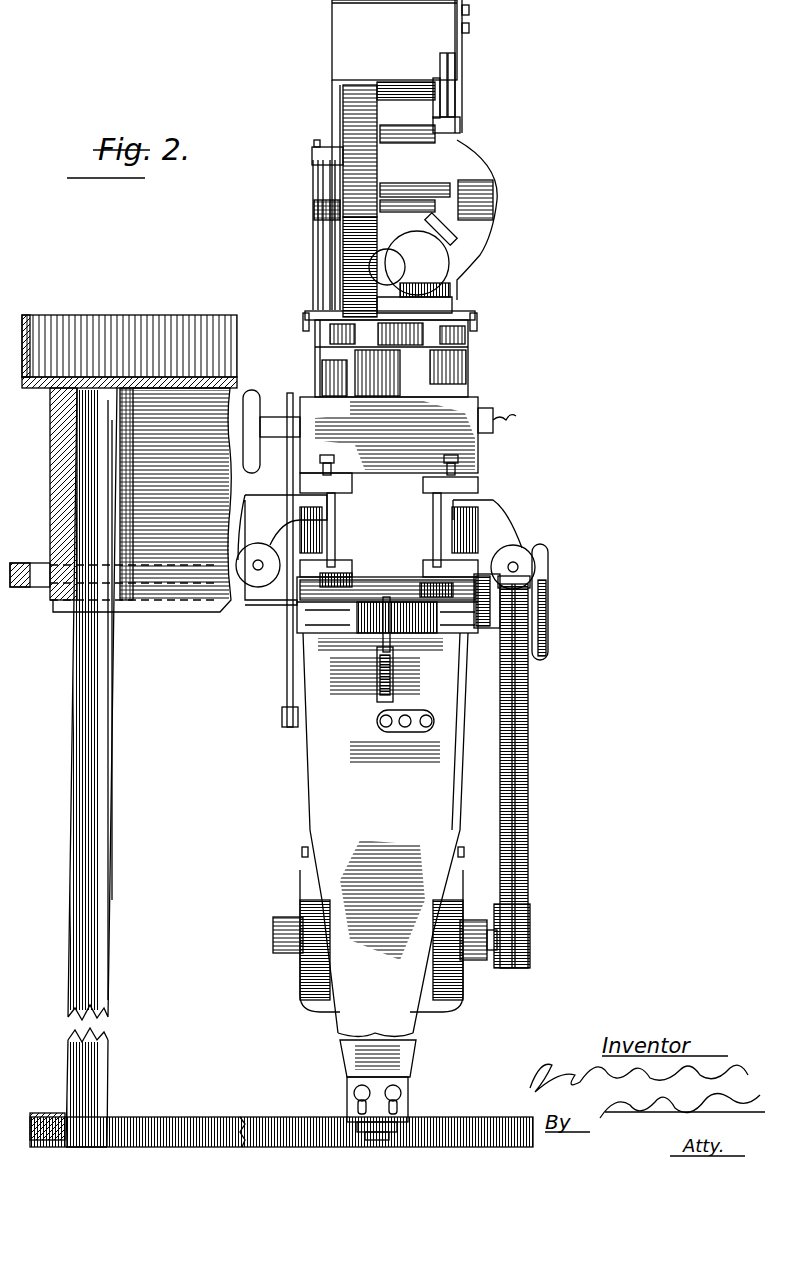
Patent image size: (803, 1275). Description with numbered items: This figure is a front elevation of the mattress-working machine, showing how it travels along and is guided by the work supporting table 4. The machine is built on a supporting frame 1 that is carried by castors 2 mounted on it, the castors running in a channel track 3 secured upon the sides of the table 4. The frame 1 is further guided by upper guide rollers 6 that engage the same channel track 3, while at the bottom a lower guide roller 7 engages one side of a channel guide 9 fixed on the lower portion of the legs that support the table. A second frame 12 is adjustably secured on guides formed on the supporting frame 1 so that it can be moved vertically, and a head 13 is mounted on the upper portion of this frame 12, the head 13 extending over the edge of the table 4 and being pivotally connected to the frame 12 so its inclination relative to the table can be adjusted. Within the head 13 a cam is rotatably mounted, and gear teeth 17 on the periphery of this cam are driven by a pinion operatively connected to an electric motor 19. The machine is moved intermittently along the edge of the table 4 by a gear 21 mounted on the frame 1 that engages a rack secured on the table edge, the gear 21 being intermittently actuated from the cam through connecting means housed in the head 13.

The supporting frame 1 is at (313, 792).
The castors 2 is at (253, 577).
The channel track 3 is at (28, 588).
The work supporting table 4 is at (143, 377).
The upper guide rollers 6 is at (430, 590).
The lower guide roller 7 is at (387, 1122).
The channel guide 9 is at (245, 1117).
The frame 12 is at (465, 390).
The head 13 is at (414, 156).
The gear teeth 17 is at (389, 162).
The electric motor 19 is at (310, 978).
The gear 21 is at (370, 620).